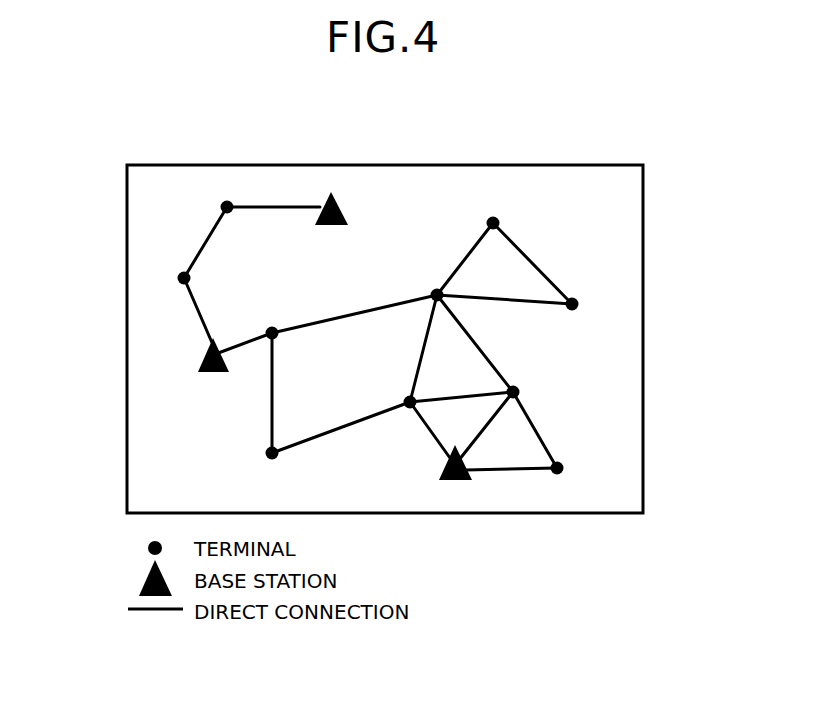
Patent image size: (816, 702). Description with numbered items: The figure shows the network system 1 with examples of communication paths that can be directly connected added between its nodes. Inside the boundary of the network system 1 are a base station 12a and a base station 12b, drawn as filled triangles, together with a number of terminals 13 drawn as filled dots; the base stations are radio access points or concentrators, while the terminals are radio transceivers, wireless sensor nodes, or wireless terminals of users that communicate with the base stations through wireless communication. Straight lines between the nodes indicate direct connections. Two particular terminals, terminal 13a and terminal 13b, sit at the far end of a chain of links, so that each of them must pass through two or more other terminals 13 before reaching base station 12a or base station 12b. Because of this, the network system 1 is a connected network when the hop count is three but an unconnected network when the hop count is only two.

The network system 1 is at (557, 165).
The base station 12a is at (455, 481).
The base station 12b is at (206, 360).
The terminal 13 is at (272, 330).
The terminal 13a is at (499, 223).
The terminal 13b is at (578, 303).